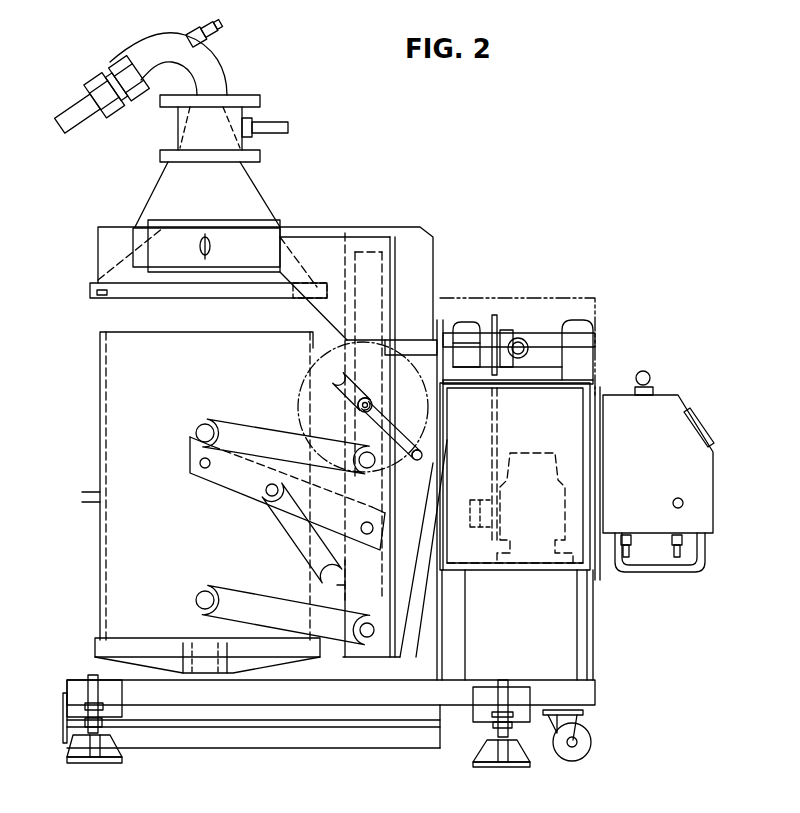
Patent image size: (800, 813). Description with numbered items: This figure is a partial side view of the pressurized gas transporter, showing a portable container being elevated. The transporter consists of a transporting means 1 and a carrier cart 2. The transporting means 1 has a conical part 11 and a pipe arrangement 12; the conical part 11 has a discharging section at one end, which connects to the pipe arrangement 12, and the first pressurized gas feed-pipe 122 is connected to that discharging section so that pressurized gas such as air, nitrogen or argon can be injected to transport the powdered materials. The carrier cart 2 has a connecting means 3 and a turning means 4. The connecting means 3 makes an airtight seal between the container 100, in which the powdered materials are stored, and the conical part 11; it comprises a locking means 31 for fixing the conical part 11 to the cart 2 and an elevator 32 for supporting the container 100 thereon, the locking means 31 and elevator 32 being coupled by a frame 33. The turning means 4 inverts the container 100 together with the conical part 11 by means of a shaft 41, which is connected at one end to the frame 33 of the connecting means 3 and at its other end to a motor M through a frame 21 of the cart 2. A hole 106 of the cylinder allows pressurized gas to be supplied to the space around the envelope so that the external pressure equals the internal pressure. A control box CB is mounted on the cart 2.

The transporting means 1 is at (167, 173).
The conical part 11 is at (247, 181).
The pipe arrangement 12 is at (112, 65).
The first pressurized gas feed-pipe 122 is at (267, 124).
The carrier cart 2 is at (593, 693).
The frame 21 is at (560, 627).
The connecting means 3 is at (358, 228).
The locking means 31 is at (320, 240).
The elevator 32 is at (97, 647).
The frame 33 is at (405, 562).
The turning means 4 is at (513, 298).
The shaft 41 is at (405, 337).
The container 100 is at (100, 355).
The hole 106 is at (98, 503).
The motor M is at (550, 460).
The control box CB is at (715, 460).